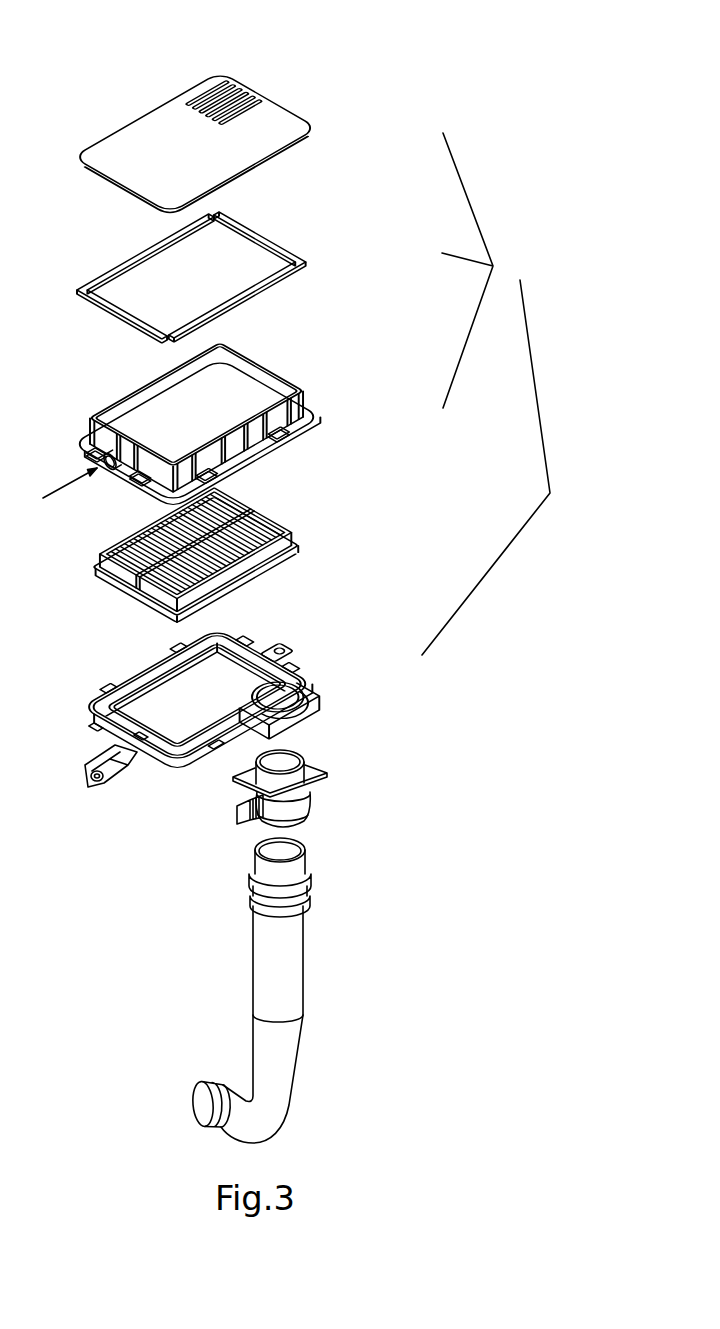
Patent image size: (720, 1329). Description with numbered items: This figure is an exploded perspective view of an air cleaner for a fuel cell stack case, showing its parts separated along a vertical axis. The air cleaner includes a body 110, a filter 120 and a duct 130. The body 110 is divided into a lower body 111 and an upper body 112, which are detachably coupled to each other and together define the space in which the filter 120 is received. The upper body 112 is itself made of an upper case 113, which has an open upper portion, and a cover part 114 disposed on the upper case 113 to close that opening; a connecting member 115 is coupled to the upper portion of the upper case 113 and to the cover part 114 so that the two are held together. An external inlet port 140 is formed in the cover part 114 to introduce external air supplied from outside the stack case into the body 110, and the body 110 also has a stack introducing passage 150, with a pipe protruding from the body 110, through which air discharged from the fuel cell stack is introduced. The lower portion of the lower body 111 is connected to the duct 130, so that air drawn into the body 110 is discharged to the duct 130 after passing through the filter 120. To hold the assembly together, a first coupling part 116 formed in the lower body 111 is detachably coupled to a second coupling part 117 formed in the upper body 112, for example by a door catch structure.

The body 110 is at (504, 467).
The lower body 111 is at (239, 726).
The upper body 112 is at (485, 270).
The upper case 113 is at (246, 446).
The cover part 114 is at (254, 113).
The connecting member 115 is at (293, 262).
The first coupling part 116 is at (135, 755).
The second coupling part 117 is at (133, 485).
The filter 120 is at (295, 538).
The duct 130 is at (294, 957).
The external inlet port 140 is at (232, 92).
The stack introducing passage 150 is at (108, 462).